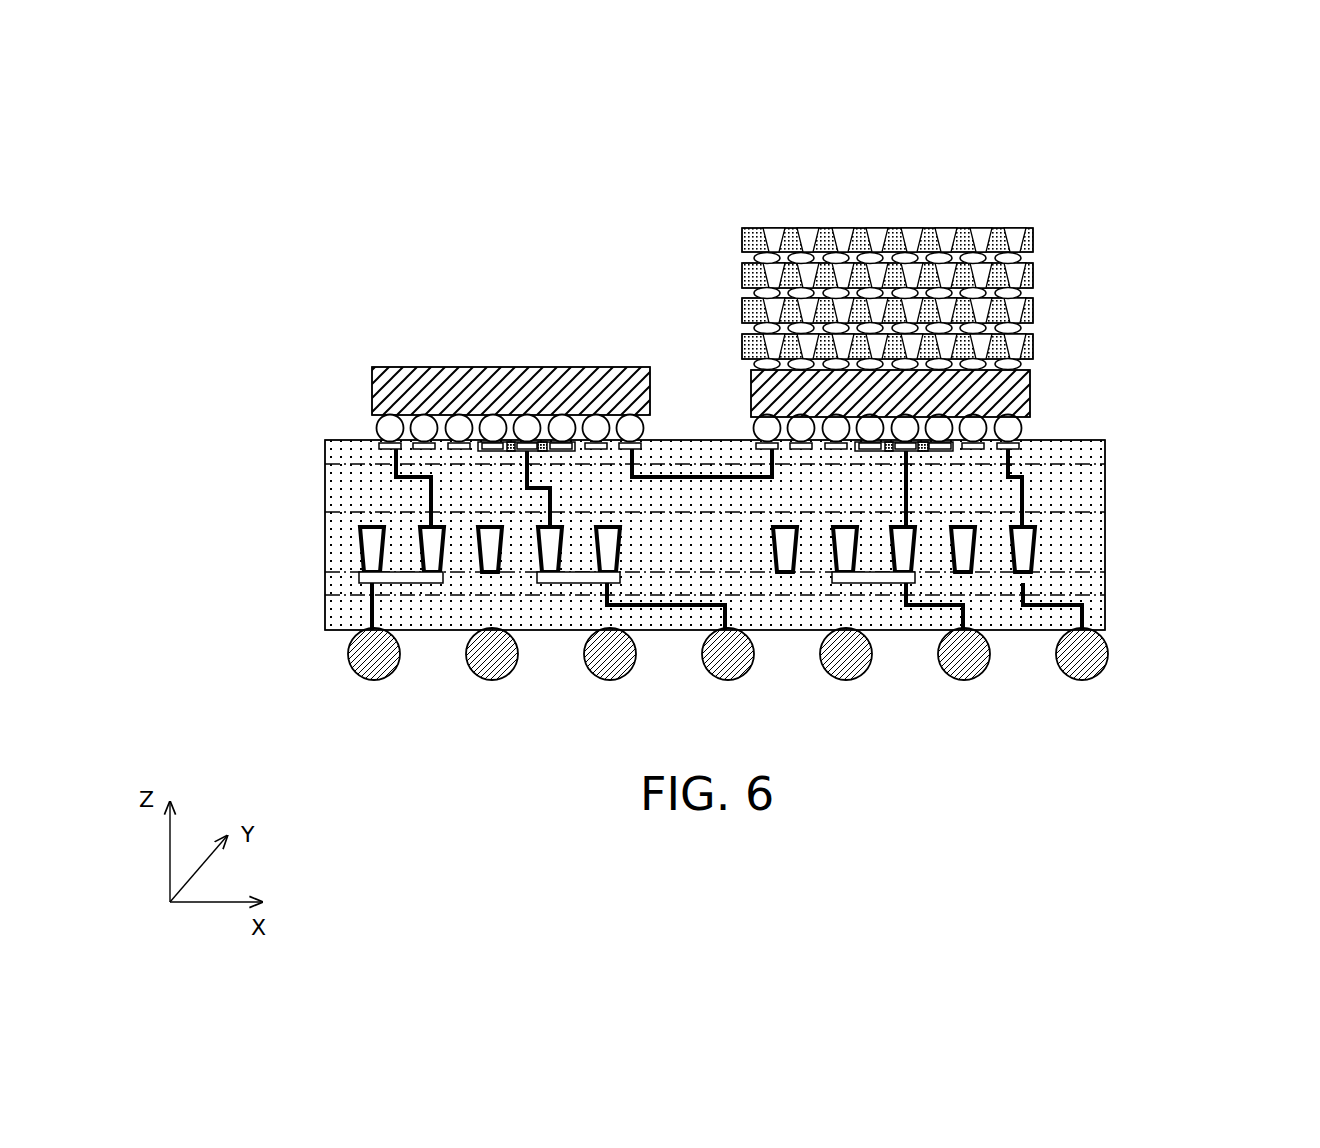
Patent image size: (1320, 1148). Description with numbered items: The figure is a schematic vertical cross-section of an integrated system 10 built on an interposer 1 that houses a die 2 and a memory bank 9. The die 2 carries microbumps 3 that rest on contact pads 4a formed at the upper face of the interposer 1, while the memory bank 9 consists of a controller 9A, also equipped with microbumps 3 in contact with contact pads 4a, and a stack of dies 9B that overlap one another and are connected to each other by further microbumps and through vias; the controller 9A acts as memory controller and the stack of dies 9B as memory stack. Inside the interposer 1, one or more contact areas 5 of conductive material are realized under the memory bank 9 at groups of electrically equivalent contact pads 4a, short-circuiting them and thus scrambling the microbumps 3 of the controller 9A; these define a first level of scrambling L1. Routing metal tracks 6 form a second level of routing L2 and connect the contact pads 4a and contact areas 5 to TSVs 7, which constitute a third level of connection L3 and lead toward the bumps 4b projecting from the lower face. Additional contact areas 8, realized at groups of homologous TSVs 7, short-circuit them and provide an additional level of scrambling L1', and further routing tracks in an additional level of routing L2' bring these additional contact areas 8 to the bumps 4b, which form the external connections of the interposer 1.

The interposer 1 is at (1105, 470).
The die 2 is at (490, 380).
The microbumps 3 is at (373, 427).
The contact pads 4a is at (460, 437).
The bumps 4b is at (360, 657).
The contact area 5 is at (548, 438).
The routing metal tracks 6 is at (688, 470).
The TSVs 7 is at (1021, 547).
The additional contact areas 8 is at (578, 586).
The memory bank 9 is at (886, 234).
The controller 9A is at (1002, 393).
The stack of dies 9B is at (1033, 310).
The integrated system 10 is at (1067, 147).
The first level of scrambling L1 is at (652, 423).
The second level of routing L2 is at (640, 465).
The additional level of scrambling L1' is at (644, 557).
The additional level of routing L2' is at (650, 628).
The third level of connection L3 is at (1070, 547).